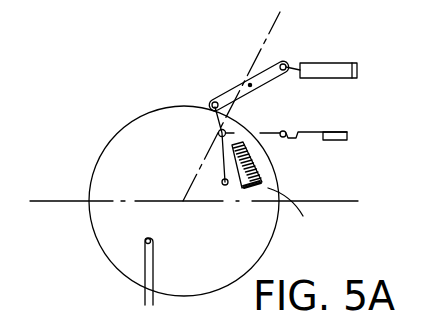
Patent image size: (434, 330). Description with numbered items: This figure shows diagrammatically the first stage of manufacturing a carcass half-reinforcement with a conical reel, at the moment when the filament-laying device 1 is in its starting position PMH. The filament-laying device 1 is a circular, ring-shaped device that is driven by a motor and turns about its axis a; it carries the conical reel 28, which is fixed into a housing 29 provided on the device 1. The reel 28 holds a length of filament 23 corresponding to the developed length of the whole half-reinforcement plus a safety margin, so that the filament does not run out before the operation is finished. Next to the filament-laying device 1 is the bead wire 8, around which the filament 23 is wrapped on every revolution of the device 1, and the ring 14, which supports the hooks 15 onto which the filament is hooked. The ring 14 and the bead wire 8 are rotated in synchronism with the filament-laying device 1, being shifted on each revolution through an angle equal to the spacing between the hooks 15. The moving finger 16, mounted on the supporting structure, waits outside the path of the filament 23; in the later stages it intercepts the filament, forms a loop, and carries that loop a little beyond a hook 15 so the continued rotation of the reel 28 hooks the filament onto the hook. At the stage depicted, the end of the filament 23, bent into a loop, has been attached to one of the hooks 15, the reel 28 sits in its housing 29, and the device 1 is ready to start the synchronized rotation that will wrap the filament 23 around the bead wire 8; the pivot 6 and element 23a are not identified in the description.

The filament-laying device 1 is at (268, 249).
The axis of roll a is at (194, 186).
The position PMH is at (258, 106).
The pivot 6 is at (218, 132).
The bead wire 8 is at (143, 240).
The ring 14 is at (343, 140).
The hooks 15 is at (288, 132).
The moving finger 16 is at (247, 85).
The filament 23 is at (222, 160).
The pin of arm 23a is at (223, 185).
The reel 28 is at (255, 168).
The housing 29 is at (300, 209).